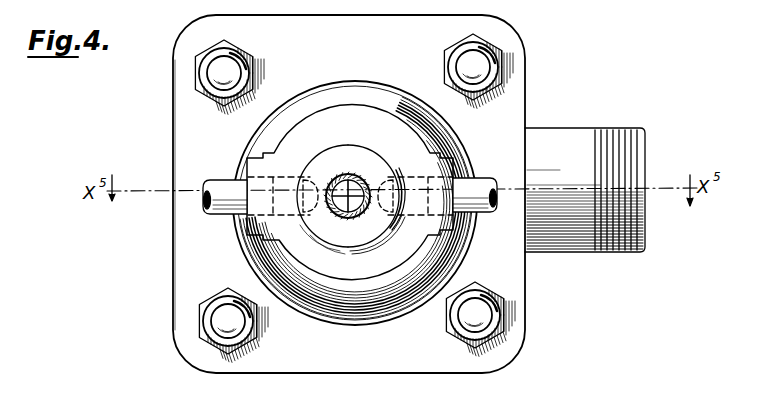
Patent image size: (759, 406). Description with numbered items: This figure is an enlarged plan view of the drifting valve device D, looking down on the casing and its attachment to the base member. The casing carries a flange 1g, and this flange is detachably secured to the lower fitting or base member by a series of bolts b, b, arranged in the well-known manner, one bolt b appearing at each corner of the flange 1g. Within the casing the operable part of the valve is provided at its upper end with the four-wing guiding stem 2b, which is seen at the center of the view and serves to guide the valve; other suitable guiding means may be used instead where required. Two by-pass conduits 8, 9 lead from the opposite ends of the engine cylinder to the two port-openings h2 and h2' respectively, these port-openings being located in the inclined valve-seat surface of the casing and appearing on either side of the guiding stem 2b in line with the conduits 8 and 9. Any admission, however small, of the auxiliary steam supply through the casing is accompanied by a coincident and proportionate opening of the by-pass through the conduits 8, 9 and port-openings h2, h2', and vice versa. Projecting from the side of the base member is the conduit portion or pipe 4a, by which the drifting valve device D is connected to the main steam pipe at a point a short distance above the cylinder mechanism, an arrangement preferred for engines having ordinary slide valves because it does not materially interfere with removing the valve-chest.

The bolt b is at (232, 62).
The by-pass conduit 8 is at (215, 180).
The by-pass conduit 9 is at (481, 182).
The port-opening h2 is at (298, 199).
The port-opening h2' is at (400, 195).
The four-wing guiding stem 2b is at (353, 178).
The conduit portion or pipe 4a is at (556, 134).
The flange 1g is at (178, 244).
The valve device D is at (335, 194).